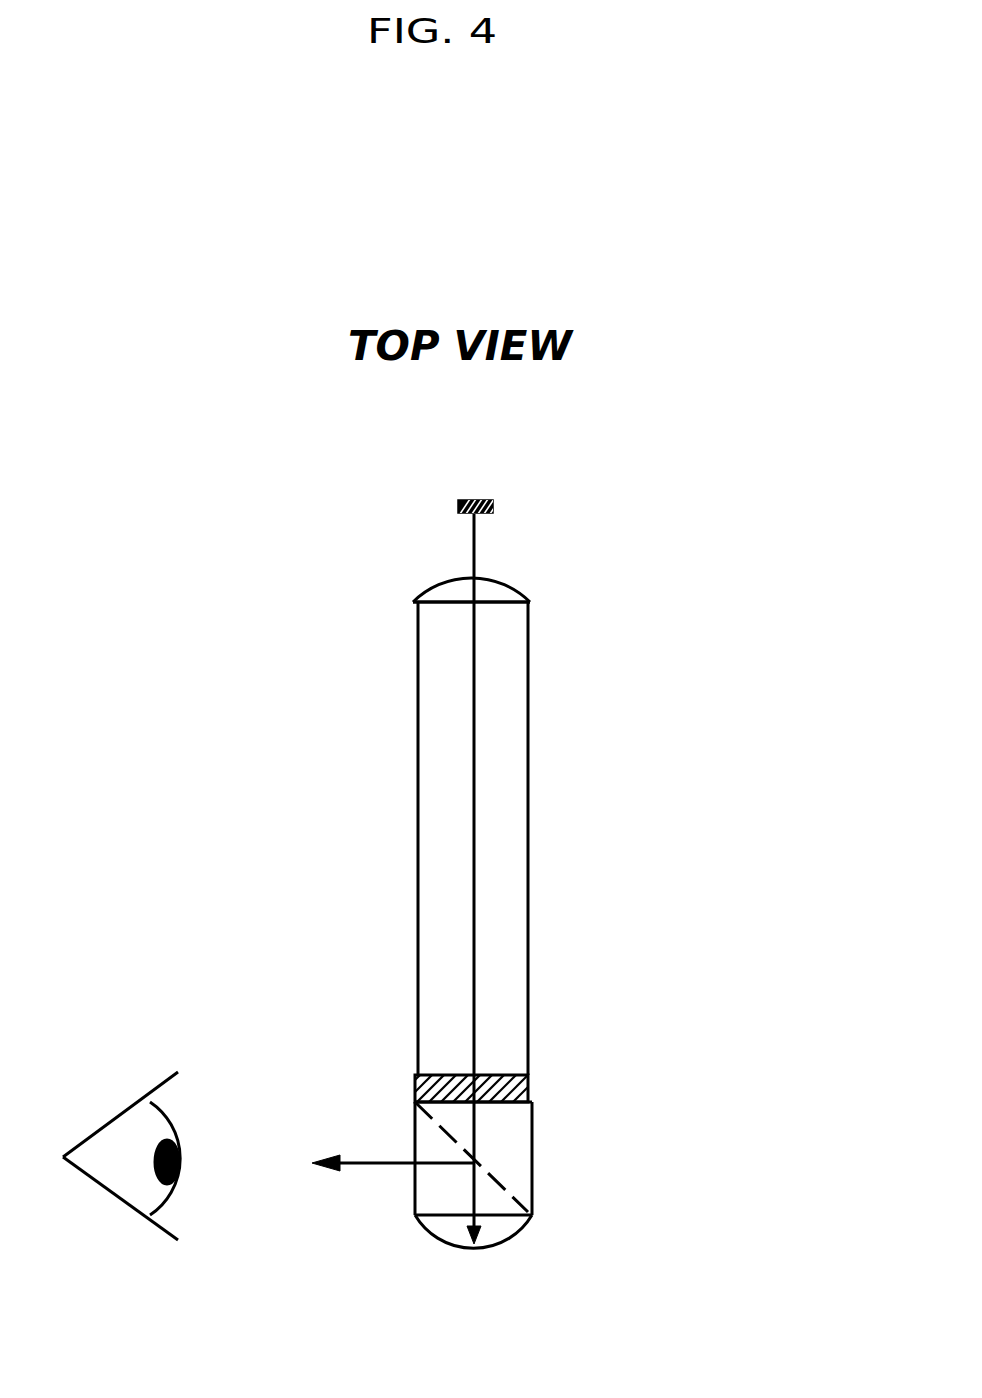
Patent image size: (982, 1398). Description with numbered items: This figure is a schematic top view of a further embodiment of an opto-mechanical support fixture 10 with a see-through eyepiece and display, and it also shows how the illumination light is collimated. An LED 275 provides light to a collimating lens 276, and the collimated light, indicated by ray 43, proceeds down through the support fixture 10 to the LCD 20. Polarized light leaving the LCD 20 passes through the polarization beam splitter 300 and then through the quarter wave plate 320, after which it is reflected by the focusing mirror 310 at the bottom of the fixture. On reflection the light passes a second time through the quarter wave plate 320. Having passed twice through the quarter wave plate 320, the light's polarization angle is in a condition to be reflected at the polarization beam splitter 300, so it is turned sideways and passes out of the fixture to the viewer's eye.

The support fixture 10 is at (535, 817).
The LED 275 is at (477, 490).
The collimating lens 276 is at (430, 583).
The ray 43 is at (462, 767).
The LCD 20 is at (517, 1088).
The polarization beam splitter 300 is at (490, 1167).
The focusing mirror 310 is at (508, 1240).
The quarter wave plate 320 is at (408, 1213).